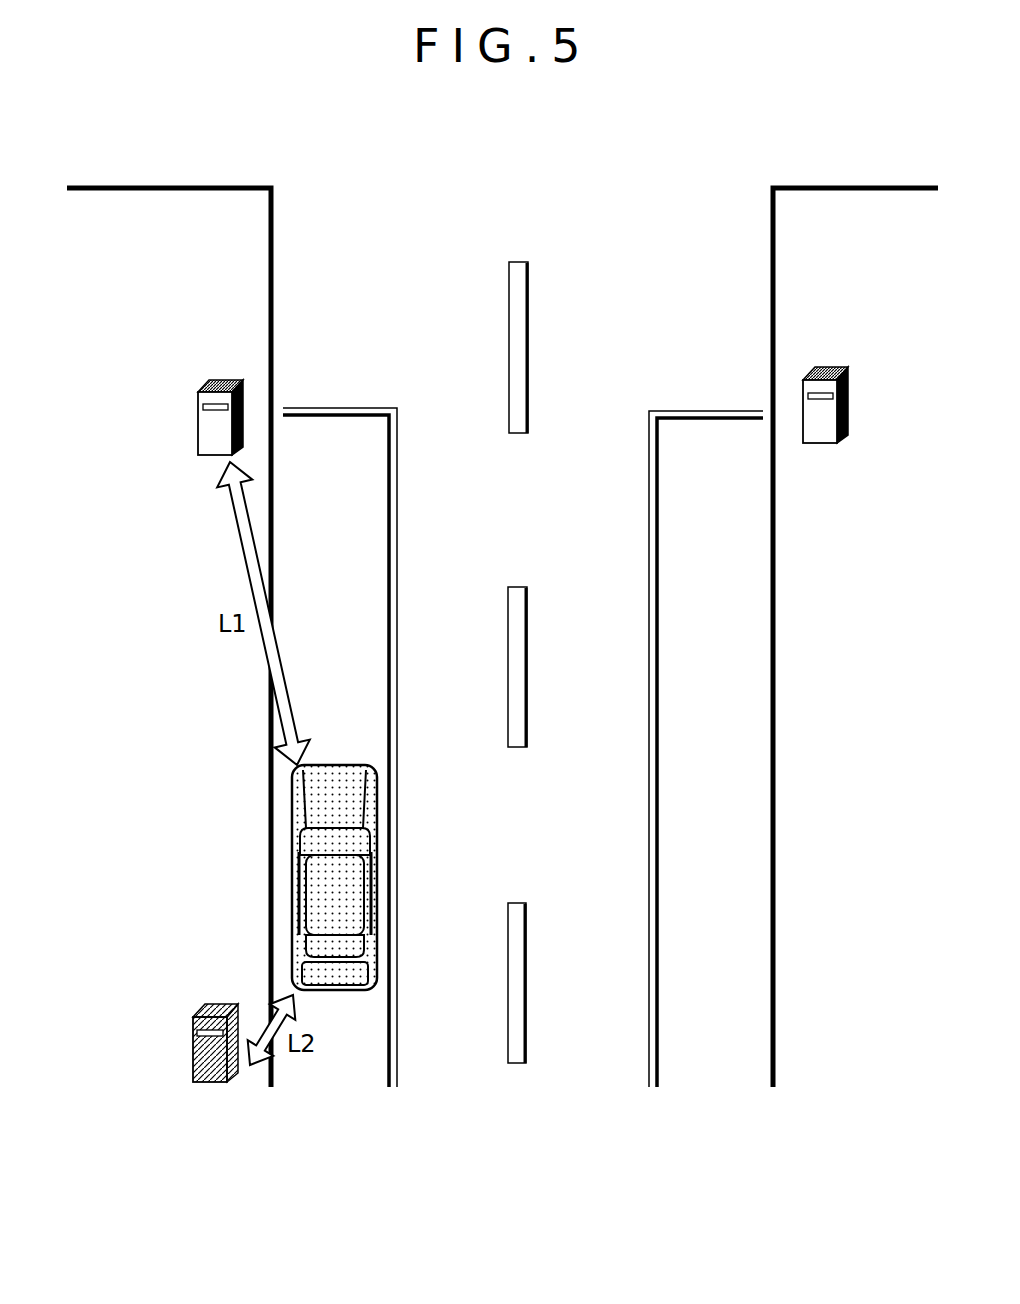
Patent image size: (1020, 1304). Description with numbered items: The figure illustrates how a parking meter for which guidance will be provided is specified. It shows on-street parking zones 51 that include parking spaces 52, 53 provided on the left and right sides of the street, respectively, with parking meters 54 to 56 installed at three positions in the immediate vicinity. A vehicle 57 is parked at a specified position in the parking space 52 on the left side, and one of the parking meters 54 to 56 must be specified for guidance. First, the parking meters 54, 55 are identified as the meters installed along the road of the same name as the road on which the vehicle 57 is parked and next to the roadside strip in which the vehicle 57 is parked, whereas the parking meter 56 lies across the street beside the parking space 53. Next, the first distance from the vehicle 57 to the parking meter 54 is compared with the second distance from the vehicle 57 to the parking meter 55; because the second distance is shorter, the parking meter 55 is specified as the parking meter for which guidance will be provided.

The on-street parking zone 51 is at (246, 340).
The parking space 52 is at (348, 538).
The parking space 53 is at (735, 538).
The parking meter 54 is at (218, 428).
The parking meter 55 is at (193, 1052).
The parking meter 56 is at (818, 414).
The vehicle 57 is at (330, 893).